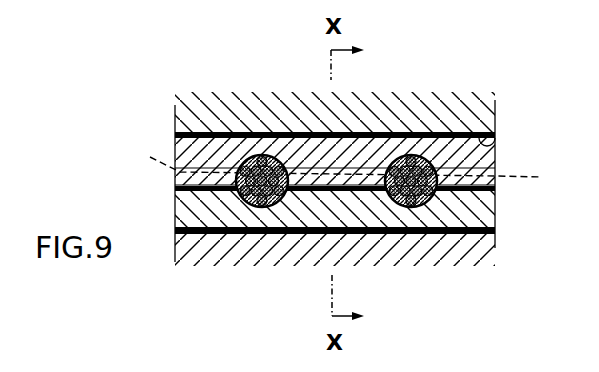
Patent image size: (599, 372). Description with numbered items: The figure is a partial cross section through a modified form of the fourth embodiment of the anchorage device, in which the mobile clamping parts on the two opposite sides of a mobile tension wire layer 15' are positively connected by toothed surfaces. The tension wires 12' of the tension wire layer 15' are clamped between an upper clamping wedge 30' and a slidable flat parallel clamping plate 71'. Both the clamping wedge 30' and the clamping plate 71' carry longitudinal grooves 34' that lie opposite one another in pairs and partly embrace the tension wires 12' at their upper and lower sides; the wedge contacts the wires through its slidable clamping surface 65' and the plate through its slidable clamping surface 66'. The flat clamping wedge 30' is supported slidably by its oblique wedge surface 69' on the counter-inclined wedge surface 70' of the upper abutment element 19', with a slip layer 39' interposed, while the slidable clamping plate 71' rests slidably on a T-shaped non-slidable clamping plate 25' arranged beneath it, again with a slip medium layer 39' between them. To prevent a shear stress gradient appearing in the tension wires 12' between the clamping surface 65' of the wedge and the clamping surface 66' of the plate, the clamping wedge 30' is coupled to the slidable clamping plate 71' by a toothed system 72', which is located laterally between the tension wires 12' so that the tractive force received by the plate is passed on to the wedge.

The upper abutment element 19' is at (335, 90).
The counter-inclined wedge surface 70' is at (342, 78).
The longitudinal grooves 34' is at (335, 183).
The clamping wedge 30' is at (364, 163).
The toothed system 72' is at (348, 121).
The tension wires 12' is at (346, 123).
The T-shaped non-slidable clamping plate 25' is at (342, 266).
The slip layer 39' is at (338, 177).
The slidable flat parallel clamping plate 71' is at (517, 174).
The oblique wedge surface 69' is at (515, 118).
The mobile tension wire layer 15' is at (336, 235).
The slidable clamping surface of the clamping wedge 65' is at (269, 132).
The slidable clamping surface of the slidable clamping plate 66' is at (340, 237).